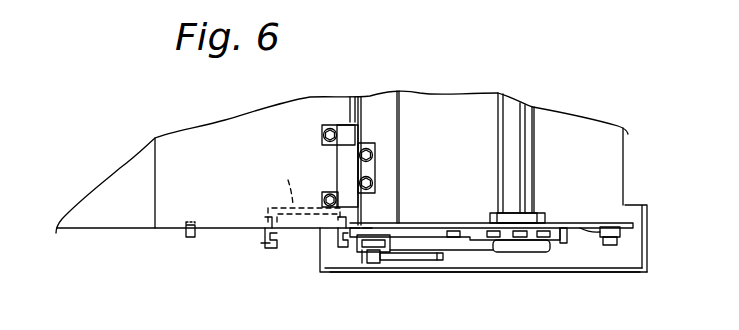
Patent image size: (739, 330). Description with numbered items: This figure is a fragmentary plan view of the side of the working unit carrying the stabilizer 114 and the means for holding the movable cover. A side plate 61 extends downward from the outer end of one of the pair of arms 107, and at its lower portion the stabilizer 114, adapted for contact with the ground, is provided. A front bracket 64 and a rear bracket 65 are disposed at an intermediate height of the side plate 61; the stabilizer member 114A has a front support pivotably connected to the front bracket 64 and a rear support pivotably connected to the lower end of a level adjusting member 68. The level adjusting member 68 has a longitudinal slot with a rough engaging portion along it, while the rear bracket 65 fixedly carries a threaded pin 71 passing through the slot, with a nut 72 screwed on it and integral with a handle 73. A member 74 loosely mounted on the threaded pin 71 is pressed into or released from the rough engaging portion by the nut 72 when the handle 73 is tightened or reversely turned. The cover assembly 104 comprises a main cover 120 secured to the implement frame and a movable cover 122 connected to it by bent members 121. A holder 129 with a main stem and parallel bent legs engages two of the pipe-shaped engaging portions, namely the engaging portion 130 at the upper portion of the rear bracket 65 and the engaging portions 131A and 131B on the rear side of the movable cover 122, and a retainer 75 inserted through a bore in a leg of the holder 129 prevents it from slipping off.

The cover assembly 104 is at (428, 88).
The main cover 120 is at (578, 122).
The bent members 121 is at (347, 128).
The movable cover 122 is at (197, 134).
The arms 107 is at (533, 148).
The holder 129 is at (296, 188).
The engaging portion 131A is at (263, 237).
The engaging portion 131B is at (190, 240).
The retainer 75 is at (263, 244).
The engaging portion 130 is at (337, 230).
The side plate 61 is at (552, 223).
The level adjusting member 68 is at (403, 240).
The rear bracket 65 is at (372, 225).
The member 74 is at (388, 233).
The threaded pin 71 is at (362, 262).
The nut 72 is at (378, 260).
The handle 73 is at (435, 260).
The front bracket 64 is at (587, 230).
The stabilizer member 114A is at (538, 266).
The stabilizer 114 is at (621, 270).